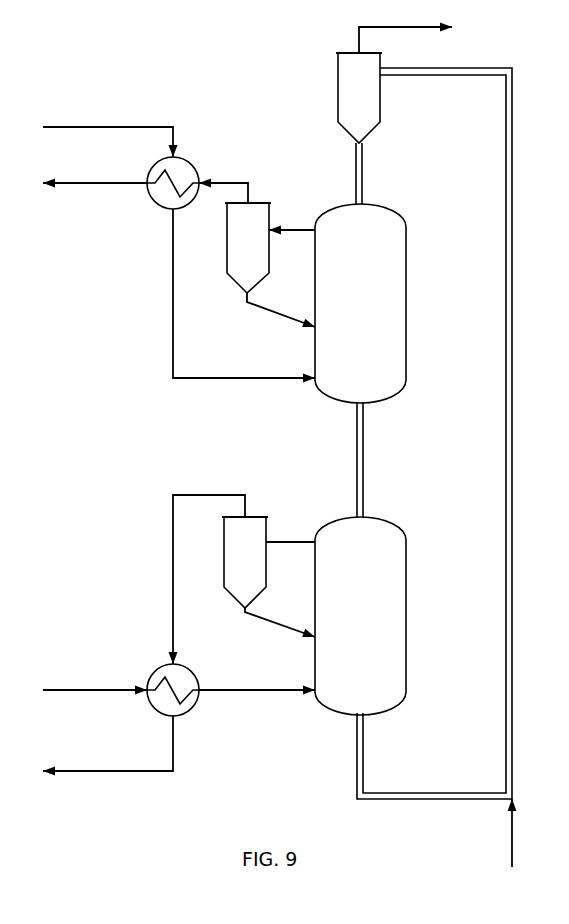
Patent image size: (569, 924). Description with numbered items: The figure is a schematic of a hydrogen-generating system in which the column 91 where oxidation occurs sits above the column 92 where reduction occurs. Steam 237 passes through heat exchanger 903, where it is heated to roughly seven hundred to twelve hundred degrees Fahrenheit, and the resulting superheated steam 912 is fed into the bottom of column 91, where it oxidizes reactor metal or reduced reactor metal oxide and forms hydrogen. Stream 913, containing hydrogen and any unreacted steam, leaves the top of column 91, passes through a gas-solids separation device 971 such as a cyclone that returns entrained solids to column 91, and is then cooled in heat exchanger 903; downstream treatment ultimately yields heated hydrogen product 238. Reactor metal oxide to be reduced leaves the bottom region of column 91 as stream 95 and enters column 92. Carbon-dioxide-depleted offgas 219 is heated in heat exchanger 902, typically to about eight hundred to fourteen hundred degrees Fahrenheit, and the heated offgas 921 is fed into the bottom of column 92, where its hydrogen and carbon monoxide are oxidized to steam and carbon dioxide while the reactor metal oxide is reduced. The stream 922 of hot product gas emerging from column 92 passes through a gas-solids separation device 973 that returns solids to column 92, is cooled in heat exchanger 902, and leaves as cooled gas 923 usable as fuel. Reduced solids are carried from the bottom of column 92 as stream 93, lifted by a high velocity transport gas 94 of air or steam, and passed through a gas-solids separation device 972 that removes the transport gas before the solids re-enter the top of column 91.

The gas-solids separation device 972 is at (394, 83).
The stream of solids 93 is at (434, 433).
The column 91 is at (360, 303).
The stream 95 is at (376, 459).
The column 92 is at (360, 616).
The transport gas 94 is at (510, 847).
The heat exchanger 903 is at (145, 208).
The steam 237 is at (110, 130).
The heated hydrogen product 238 is at (95, 174).
The gas-solids separation device 973 is at (257, 253).
The stream 913 is at (292, 217).
The superheated steam 912 is at (244, 296).
The gas-solids separation device 971 is at (242, 579).
The stream of hot product gas 922 is at (290, 530).
The heated offgas 921 is at (257, 681).
The heat exchanger 902 is at (147, 653).
The CO2-depleted offgas 219 is at (95, 681).
The cooled gas 923 is at (108, 746).